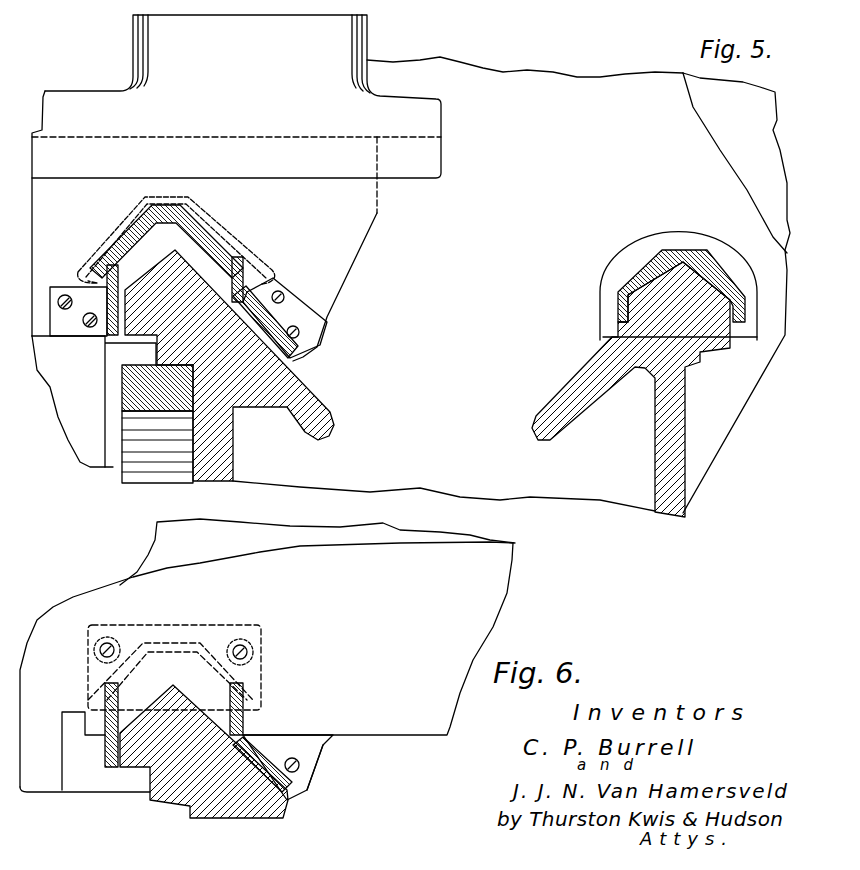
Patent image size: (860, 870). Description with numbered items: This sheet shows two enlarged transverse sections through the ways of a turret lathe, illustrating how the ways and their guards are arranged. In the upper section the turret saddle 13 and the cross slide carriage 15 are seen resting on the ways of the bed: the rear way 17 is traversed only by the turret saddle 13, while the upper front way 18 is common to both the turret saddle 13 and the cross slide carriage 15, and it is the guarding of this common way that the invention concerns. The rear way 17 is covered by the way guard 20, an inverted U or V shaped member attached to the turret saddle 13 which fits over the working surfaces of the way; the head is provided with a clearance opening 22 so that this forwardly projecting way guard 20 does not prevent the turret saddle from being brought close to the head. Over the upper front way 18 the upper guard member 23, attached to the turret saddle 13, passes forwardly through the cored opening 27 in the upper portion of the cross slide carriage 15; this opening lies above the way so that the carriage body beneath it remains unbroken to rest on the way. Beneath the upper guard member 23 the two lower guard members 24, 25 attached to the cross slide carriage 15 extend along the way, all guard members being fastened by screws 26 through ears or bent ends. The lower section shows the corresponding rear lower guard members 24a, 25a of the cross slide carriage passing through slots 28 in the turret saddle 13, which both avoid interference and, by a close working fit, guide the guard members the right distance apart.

In FIG. 5, the turret saddle 13 is at (130, 63).
In FIG. 6, the turret saddle 13 is at (505, 576).
In FIG. 5, the cross slide carriage 15 is at (355, 243).
In FIG. 6, the cross slide carriage 15 is at (326, 740).
In FIG. 5, the rear way 17 is at (647, 268).
In FIG. 5, the upper front way 18 is at (250, 361).
In FIG. 6, the upper front way 18 is at (175, 796).
In FIG. 5, the way guard 20 is at (682, 252).
In FIG. 5, the clearance opening 22 is at (620, 263).
In FIG. 5, the upper guard member 23 is at (232, 228).
In FIG. 6, the upper guard member 23 is at (140, 647).
In FIG. 5, the lower guard member 24 is at (80, 288).
In FIG. 6, the lower guard member 24a is at (98, 718).
In FIG. 5, the lower guard member 25 is at (270, 292).
In FIG. 6, the lower guard member 25a is at (247, 718).
In FIG. 5, the screws 26 is at (300, 333).
In FIG. 6, the screws 26 is at (102, 691).
In FIG. 5, the cored opening 27 is at (114, 232).
In FIG. 6, the slots 28 is at (247, 689).